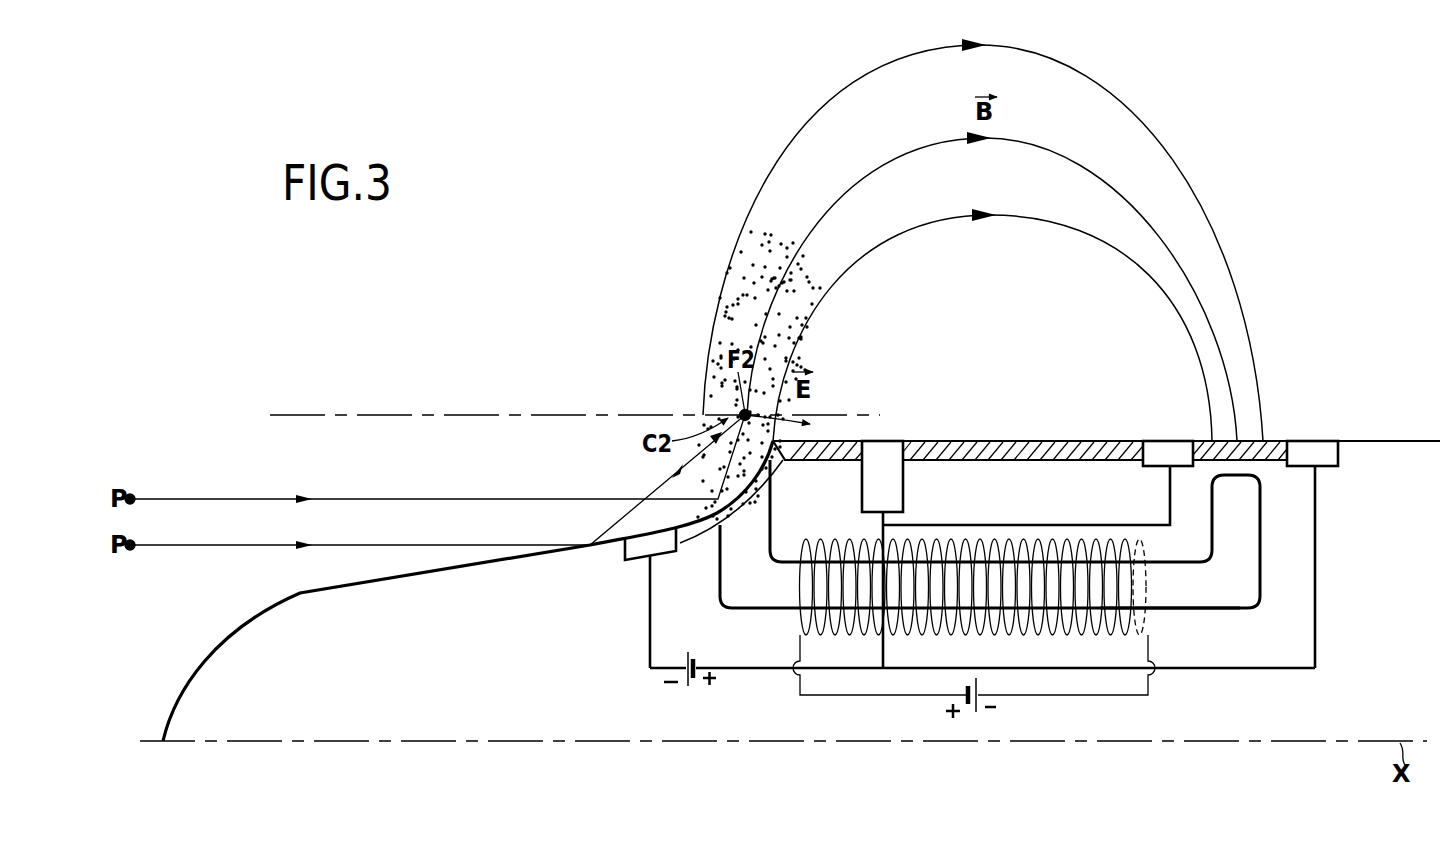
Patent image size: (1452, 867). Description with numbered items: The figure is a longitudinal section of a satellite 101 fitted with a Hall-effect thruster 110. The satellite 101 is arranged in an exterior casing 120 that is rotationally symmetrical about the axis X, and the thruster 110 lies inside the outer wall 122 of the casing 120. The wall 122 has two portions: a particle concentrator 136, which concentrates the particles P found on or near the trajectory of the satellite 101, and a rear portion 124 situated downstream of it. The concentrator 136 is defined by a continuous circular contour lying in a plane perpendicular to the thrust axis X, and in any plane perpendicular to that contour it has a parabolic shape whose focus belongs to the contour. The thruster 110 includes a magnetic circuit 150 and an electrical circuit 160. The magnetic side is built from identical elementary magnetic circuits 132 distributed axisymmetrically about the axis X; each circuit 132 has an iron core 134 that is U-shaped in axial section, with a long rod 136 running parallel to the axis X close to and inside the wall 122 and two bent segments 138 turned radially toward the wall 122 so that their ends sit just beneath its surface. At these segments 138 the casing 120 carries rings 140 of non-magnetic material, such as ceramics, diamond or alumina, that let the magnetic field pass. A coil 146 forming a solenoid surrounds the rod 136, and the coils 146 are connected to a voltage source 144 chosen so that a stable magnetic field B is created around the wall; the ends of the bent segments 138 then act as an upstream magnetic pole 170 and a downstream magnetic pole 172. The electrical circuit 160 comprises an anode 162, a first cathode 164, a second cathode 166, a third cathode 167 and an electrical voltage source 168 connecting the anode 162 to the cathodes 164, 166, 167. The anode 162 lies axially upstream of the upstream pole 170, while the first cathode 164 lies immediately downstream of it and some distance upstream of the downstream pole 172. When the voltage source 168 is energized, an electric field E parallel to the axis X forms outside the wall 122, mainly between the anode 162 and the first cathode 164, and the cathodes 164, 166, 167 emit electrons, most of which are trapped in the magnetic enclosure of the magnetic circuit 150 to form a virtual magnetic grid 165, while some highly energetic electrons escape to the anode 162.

The satellite 101 is at (510, 328).
The Hall-effect thruster 110 is at (634, 410).
The exterior casing 120 is at (1363, 417).
The outer wall 122 is at (1004, 438).
The rear portion 124 is at (1076, 440).
The elementary magnetic circuit 132 is at (790, 632).
The iron core 134 is at (1183, 612).
The particle concentrator / long rod 136 is at (553, 520).
The bent segments 138 is at (1228, 527).
The rings of non-magnetic material 140 is at (1247, 425).
The voltage source 144 is at (988, 707).
The coil 146 is at (988, 526).
The magnetic circuit 150 is at (1193, 140).
The electrical circuit 160 is at (605, 691).
The anode 162 is at (634, 560).
The first cathode 164 is at (886, 482).
The virtual magnetic grid 165 is at (720, 275).
The second cathode 166 is at (1168, 440).
The third cathode 167 is at (1313, 440).
The electrical voltage source 168 is at (688, 685).
The upstream magnetic pole 170 is at (772, 497).
The downstream magnetic pole 172 is at (1262, 480).